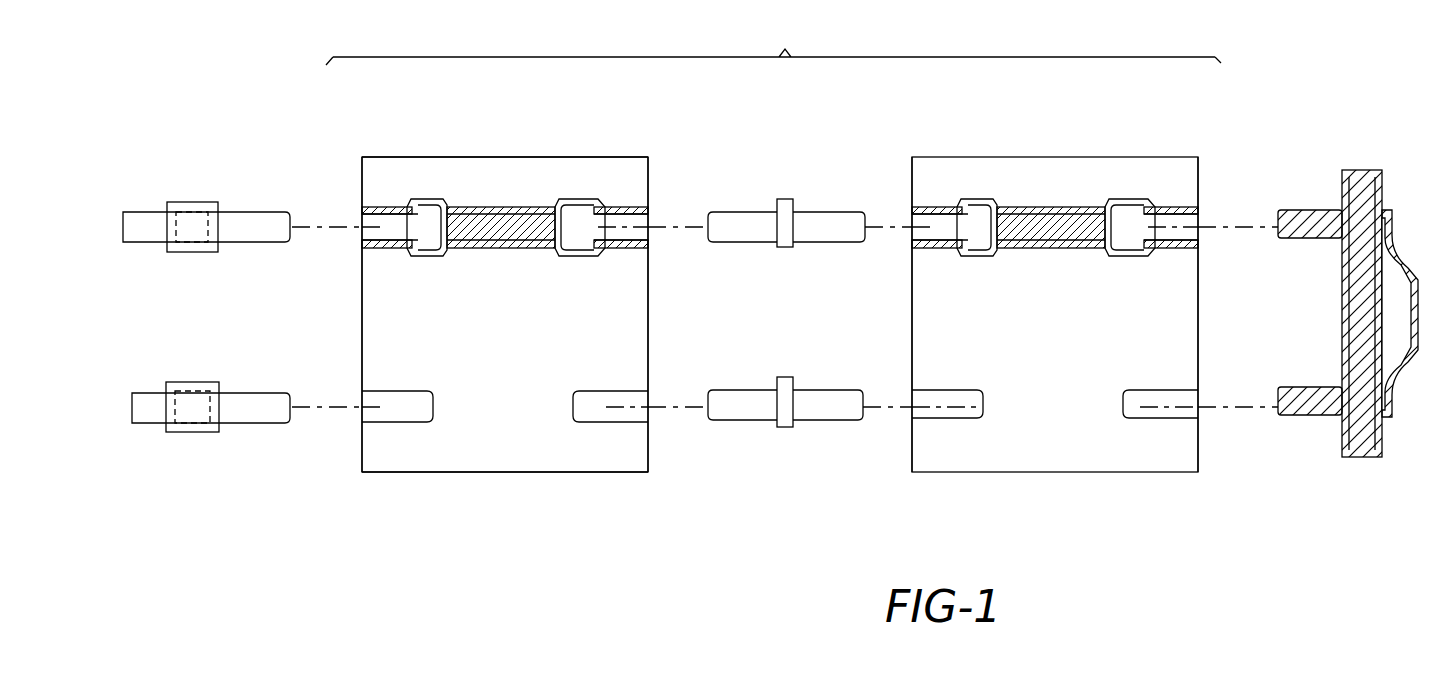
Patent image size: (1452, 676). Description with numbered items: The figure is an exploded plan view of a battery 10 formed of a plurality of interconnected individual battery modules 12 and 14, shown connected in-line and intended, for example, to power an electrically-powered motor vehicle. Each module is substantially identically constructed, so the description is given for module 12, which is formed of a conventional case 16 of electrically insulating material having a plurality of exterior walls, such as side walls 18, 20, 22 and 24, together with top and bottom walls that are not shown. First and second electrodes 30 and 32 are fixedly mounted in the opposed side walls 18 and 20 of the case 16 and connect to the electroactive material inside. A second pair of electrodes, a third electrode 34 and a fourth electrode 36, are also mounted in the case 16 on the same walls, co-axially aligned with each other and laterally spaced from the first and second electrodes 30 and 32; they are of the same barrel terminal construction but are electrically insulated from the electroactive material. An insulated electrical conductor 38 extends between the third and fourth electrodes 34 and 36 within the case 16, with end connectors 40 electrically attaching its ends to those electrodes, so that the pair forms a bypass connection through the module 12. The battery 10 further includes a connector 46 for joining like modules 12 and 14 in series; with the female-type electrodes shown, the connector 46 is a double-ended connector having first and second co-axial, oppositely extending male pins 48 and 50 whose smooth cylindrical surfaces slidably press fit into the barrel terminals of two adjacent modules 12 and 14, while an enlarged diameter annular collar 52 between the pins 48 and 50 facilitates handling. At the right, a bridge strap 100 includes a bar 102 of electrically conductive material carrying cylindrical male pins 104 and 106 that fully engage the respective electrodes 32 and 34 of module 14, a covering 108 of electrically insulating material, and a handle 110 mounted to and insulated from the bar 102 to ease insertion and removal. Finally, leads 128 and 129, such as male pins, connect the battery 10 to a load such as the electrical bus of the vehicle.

The battery 10 is at (773, 42).
The battery module 12 is at (505, 267).
The battery module 14 is at (985, 118).
The case 16 is at (404, 156).
The side wall 18 is at (362, 330).
The side wall 20 is at (650, 328).
The side wall 22 is at (465, 473).
The side wall 24 is at (500, 156).
The first electrode 30 is at (396, 420).
The second electrode 32 is at (592, 420).
The third electrode 34 is at (614, 209).
The fourth electrode 36 is at (383, 208).
The insulated electrical conductor 38 is at (515, 212).
The end connector 40 is at (432, 256).
The connector 46 is at (775, 311).
The first male pin 48 is at (730, 212).
The second male pin 50 is at (850, 212).
The annular collar 52 is at (786, 248).
The bridge strap 100 is at (1337, 288).
The bar 102 is at (1366, 458).
The male pin 104 is at (1290, 416).
The male pin 106 is at (1288, 214).
The covering 108 is at (1417, 267).
The handle 110 is at (1419, 285).
The lead 128 is at (243, 214).
The lead 129 is at (252, 412).